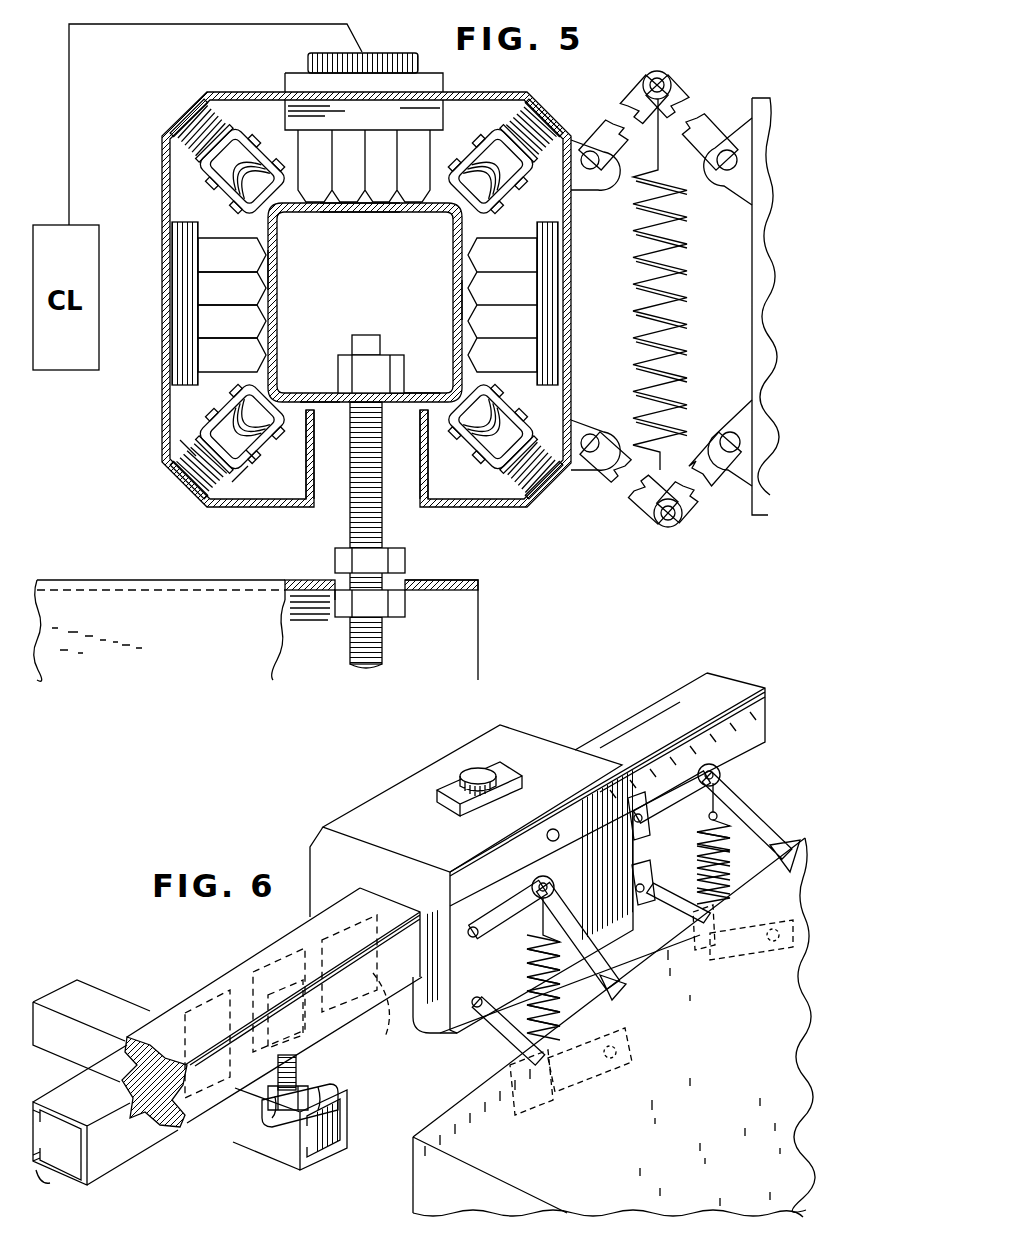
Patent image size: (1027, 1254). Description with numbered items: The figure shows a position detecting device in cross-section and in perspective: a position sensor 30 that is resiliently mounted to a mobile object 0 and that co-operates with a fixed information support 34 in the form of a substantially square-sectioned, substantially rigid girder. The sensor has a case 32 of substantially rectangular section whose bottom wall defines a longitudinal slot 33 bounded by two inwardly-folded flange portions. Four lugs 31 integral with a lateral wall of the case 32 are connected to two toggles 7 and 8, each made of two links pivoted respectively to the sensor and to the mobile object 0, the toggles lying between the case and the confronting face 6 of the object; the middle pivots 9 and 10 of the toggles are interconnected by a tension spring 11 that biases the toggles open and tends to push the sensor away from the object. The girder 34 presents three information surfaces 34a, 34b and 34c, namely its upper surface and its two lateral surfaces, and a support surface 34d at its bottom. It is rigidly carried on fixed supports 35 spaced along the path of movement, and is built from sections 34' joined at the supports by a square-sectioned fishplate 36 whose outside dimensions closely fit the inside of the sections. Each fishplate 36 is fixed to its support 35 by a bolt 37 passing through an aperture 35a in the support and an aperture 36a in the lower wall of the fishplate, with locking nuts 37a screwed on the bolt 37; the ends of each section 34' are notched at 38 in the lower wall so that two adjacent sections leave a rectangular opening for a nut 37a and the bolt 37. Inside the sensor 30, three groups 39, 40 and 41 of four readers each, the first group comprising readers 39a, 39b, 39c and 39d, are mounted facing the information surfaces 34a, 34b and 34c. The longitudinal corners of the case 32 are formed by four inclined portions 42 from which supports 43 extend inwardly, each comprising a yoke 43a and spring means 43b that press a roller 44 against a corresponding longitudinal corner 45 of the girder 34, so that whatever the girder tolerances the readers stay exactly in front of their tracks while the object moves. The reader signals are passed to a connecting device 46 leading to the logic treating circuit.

In FIG. 5, the mobile object 0 is at (750, 246).
In FIG. 6, the mobile object 0 is at (400, 1210).
In FIG. 5, the confronting face of the mobile object 6 is at (755, 360).
In FIG. 5, the toggle 7 is at (700, 98).
In FIG. 6, the toggle 7 is at (592, 1003).
In FIG. 5, the toggle 8 is at (700, 500).
In FIG. 6, the toggle 8 is at (568, 1090).
In FIG. 5, the middle pivot 9 is at (644, 82).
In FIG. 6, the middle pivot 9 is at (556, 890).
In FIG. 5, the middle pivot 10 is at (655, 521).
In FIG. 6, the middle pivot 10 is at (532, 1100).
In FIG. 5, the tension spring 11 is at (686, 276).
In FIG. 6, the tension spring 11 is at (560, 1008).
In FIG. 5, the position sensor 30 is at (160, 188).
In FIG. 6, the position sensor 30 is at (612, 928).
In FIG. 5, the lug 31 is at (578, 136).
In FIG. 6, the lug 31 is at (468, 934).
In FIG. 5, the case 32 is at (558, 300).
In FIG. 5, the longitudinal slot 33 is at (425, 468).
In FIG. 5, the information support 34 is at (365, 302).
In FIG. 6, the information support 34 is at (443, 900).
In FIG. 5, the information surface 34a is at (270, 270).
In FIG. 5, the information surface 34b is at (352, 214).
In FIG. 6, the information surface 34b is at (680, 717).
In FIG. 5, the information surface 34c is at (462, 300).
In FIG. 6, the information surface 34c is at (642, 758).
In FIG. 5, the support surface 34d is at (352, 398).
In FIG. 6, the girder section 34' is at (422, 963).
In FIG. 5, the fixed support 35 is at (132, 580).
In FIG. 6, the fixed support 35 is at (132, 1015).
In FIG. 5, the aperture 35a is at (297, 603).
In FIG. 6, the aperture 35a is at (340, 1126).
In FIG. 5, the fishplate 36 is at (355, 216).
In FIG. 6, the fishplate 36 is at (388, 1030).
In FIG. 5, the aperture 36a is at (376, 396).
In FIG. 5, the bolt 37 is at (349, 492).
In FIG. 6, the bolt 37 is at (307, 1080).
In FIG. 5, the locking nut 37a is at (340, 392).
In FIG. 6, the locking nut 37a is at (298, 1058).
In FIG. 6, the notch 38 is at (262, 1002).
In FIG. 5, the group of readers 39 is at (196, 362).
In FIG. 5, the reader 39a is at (200, 352).
In FIG. 5, the reader 39b is at (215, 322).
In FIG. 5, the reader 39c is at (215, 288).
In FIG. 5, the reader 39d is at (215, 253).
In FIG. 5, the group of readers 40 is at (312, 162).
In FIG. 5, the group of readers 41 is at (514, 246).
In FIG. 5, the inclined portion 42 is at (176, 130).
In FIG. 5, the support 43 is at (240, 128).
In FIG. 5, the yoke 43a is at (245, 482).
In FIG. 5, the spring means 43b is at (188, 445).
In FIG. 5, the roller 44 is at (250, 458).
In FIG. 5, the longitudinal corner 45 is at (232, 232).
In FIG. 5, the connecting device 46 is at (305, 78).
In FIG. 6, the connecting device 46 is at (458, 800).